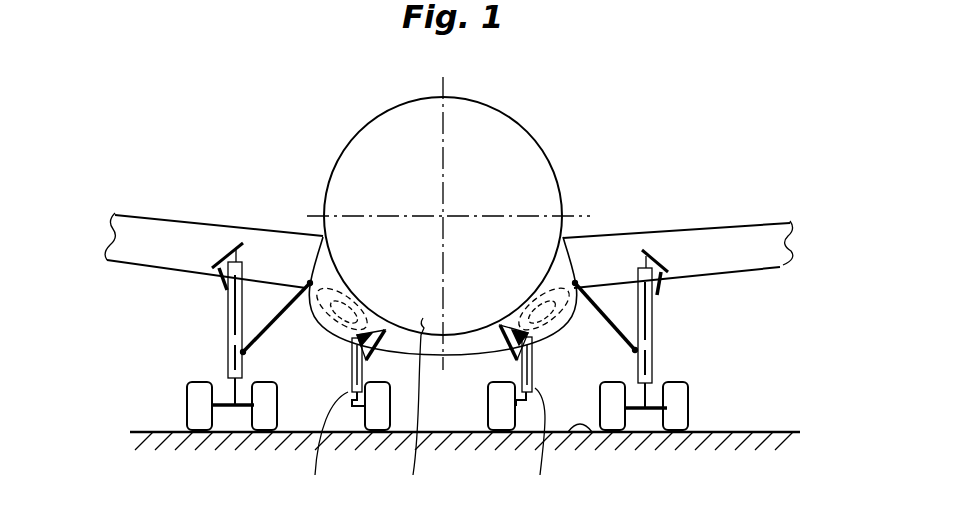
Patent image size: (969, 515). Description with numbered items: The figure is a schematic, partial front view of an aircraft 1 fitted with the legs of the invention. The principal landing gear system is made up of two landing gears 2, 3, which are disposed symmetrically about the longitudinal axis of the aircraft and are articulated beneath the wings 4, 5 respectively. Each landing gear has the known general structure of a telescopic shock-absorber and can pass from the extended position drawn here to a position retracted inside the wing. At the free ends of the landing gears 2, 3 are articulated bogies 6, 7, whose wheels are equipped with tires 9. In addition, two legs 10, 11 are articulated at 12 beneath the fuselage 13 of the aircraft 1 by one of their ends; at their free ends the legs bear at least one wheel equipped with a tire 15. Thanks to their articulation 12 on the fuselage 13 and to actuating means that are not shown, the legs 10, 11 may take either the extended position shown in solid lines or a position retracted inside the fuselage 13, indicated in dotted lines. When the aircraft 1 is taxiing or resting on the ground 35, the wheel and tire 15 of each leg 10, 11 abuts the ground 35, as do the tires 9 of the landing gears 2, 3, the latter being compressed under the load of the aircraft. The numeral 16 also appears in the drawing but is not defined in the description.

The aircraft 1 is at (534, 121).
The landing gear 2 is at (228, 318).
The landing gear 3 is at (652, 318).
The wing 4 is at (191, 228).
The wing 5 is at (708, 240).
The bogie 6 is at (216, 378).
The bogie 7 is at (660, 376).
The tires 9 is at (191, 392).
The leg 10 is at (347, 380).
The leg 11 is at (539, 377).
The articulation 12 is at (366, 333).
The fuselage 13 is at (411, 408).
The tire 15 is at (386, 392).
The fuselage gear legs 16 is at (429, 443).
The ground 35 is at (585, 436).